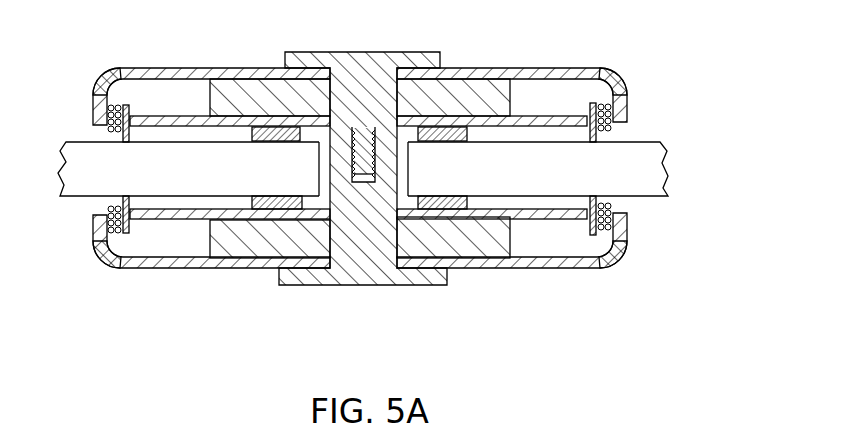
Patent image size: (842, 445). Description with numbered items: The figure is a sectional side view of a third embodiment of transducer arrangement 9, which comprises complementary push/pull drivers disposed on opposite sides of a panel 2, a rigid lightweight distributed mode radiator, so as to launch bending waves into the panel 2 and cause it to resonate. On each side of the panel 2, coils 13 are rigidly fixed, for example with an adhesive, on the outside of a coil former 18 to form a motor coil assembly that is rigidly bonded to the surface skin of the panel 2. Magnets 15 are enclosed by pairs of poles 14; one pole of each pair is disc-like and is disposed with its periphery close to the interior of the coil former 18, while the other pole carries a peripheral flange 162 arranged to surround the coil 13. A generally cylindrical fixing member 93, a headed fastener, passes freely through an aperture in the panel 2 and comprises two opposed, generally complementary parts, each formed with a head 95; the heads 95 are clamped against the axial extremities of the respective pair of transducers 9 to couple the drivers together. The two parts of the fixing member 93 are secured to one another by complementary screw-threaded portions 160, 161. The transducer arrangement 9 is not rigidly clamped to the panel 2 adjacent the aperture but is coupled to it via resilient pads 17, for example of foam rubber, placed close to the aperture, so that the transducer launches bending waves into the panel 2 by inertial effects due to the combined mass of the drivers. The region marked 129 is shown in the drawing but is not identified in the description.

The panel 2 is at (627, 183).
The transducer arrangement 9 is at (155, 300).
The coils 13 is at (111, 84).
The poles 14 is at (540, 108).
The magnets 15 is at (226, 85).
The resilient pads 17 is at (262, 131).
The coil former 18 is at (598, 100).
The fixing member 93 is at (357, 225).
The head 95 is at (365, 65).
The shaft end 129 is at (324, 156).
The screw-threaded portion 160 is at (392, 176).
The screw-threaded portion 161 is at (368, 150).
The peripheral flange 162 is at (627, 107).